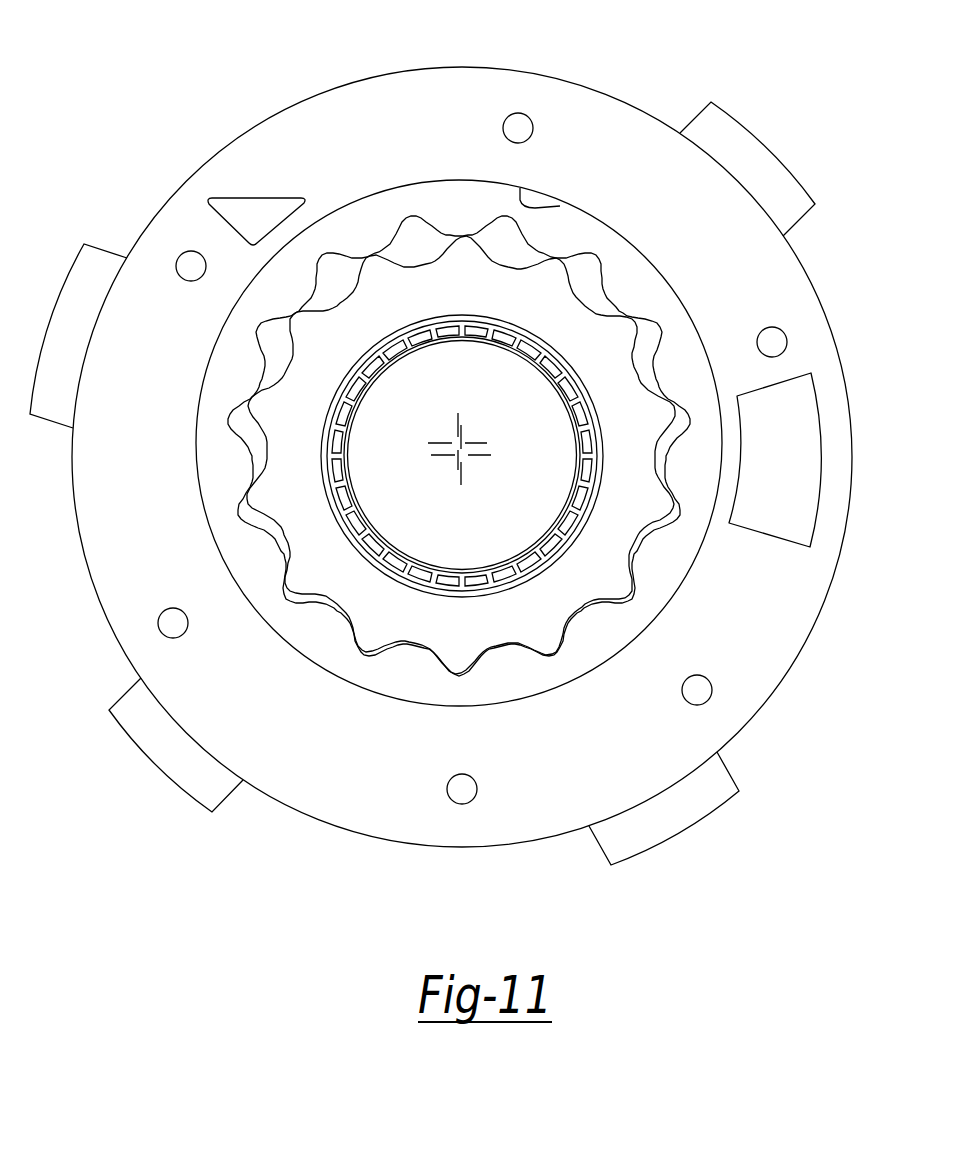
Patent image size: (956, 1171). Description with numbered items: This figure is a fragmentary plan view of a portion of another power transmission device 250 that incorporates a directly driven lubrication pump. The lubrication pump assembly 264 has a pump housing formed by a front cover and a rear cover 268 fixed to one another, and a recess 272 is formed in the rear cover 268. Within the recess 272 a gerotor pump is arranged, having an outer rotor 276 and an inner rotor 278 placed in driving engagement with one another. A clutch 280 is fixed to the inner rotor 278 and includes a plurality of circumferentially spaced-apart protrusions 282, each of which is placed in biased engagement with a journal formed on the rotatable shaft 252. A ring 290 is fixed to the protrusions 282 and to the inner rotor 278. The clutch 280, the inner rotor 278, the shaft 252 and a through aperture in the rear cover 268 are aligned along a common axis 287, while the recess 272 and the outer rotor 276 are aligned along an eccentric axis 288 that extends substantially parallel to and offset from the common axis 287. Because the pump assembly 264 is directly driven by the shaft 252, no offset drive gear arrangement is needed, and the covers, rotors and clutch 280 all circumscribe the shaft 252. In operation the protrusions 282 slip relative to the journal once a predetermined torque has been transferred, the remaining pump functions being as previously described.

The power transmission device 250 is at (196, 96).
The lubrication pump assembly 264 is at (453, 62).
The rear cover 268 is at (758, 666).
The recess 272 is at (548, 206).
The outer rotor 276 is at (633, 285).
The inner rotor 278 is at (268, 499).
The clutch 280 is at (356, 353).
The ring 290 is at (479, 314).
The protrusions 282 is at (458, 337).
The rotatable shaft 252 is at (433, 522).
The eccentric axis 288 is at (458, 443).
The common axis 287 is at (462, 457).